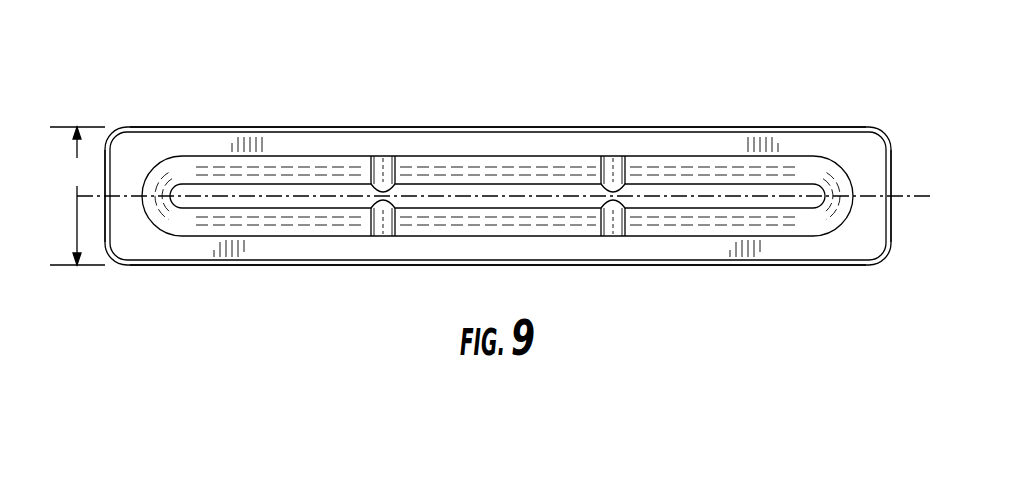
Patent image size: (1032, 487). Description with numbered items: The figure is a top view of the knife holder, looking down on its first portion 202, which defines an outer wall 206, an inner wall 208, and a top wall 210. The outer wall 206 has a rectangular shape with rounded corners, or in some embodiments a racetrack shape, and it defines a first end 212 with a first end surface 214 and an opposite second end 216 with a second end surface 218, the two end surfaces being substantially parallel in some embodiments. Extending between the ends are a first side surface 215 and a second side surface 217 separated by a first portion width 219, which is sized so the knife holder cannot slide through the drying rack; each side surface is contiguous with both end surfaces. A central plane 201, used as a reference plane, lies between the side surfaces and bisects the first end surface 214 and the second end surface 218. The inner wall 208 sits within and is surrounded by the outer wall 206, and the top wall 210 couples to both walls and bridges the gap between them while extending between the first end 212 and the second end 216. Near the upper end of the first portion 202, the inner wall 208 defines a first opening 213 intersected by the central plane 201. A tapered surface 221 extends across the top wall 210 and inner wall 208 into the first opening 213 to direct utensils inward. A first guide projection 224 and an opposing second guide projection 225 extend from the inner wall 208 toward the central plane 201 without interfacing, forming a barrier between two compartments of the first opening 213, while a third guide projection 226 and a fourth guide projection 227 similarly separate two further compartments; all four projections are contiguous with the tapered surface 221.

The central plane 201 is at (787, 193).
The first portion 202 is at (120, 52).
The outer wall 206 is at (212, 127).
The inner wall 208 is at (285, 180).
The top wall 210 is at (456, 147).
The first end 212 is at (105, 282).
The first opening 213 is at (550, 190).
The first end surface 214 is at (105, 208).
The first side surface 215 is at (572, 128).
The second end 216 is at (878, 275).
The second side surface 217 is at (270, 265).
The second end surface 218 is at (892, 172).
The first portion width 219 is at (77, 196).
The tapered surface 221 is at (702, 170).
The first guide projection 224 is at (618, 172).
The second guide projection 225 is at (612, 226).
The third guide projection 226 is at (385, 172).
The fourth guide projection 227 is at (382, 226).